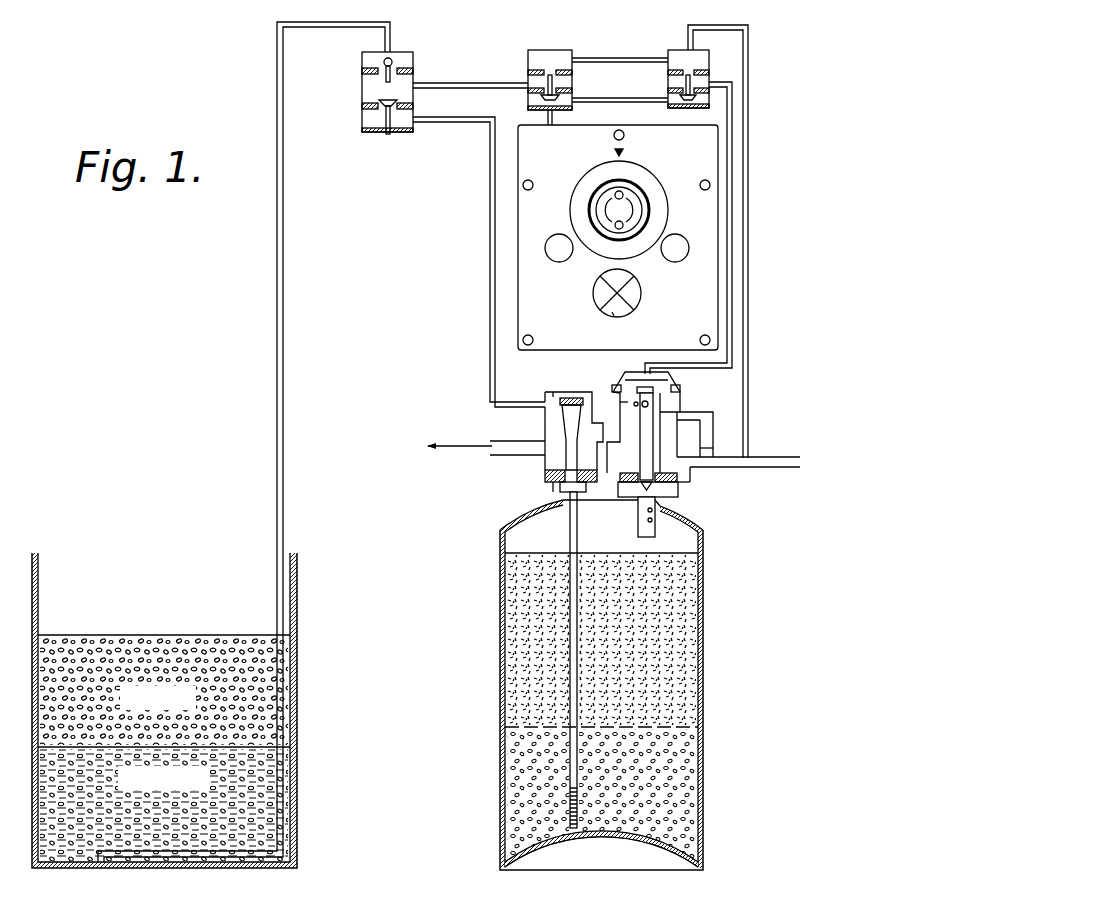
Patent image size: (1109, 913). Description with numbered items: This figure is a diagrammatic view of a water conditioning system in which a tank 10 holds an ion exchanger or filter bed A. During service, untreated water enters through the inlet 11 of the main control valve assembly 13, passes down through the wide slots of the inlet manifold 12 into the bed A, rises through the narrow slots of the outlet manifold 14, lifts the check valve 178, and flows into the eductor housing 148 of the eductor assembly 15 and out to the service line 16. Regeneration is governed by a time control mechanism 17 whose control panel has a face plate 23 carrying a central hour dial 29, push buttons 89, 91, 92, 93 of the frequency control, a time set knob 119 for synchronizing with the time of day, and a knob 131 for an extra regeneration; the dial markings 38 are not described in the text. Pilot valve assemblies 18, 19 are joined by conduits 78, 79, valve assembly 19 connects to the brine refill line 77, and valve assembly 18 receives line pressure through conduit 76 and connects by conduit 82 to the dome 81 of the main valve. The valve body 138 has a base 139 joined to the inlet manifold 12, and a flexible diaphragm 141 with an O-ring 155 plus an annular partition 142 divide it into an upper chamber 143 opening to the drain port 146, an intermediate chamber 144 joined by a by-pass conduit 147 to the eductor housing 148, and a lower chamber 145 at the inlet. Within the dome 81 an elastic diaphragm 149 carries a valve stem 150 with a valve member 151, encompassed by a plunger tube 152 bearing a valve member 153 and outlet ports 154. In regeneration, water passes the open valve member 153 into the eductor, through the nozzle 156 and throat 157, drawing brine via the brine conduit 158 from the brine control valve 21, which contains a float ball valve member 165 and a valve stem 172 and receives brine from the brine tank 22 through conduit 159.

The tank 10 is at (706, 606).
The inlet 11 is at (763, 460).
The inlet manifold 12 is at (640, 506).
The main control valve assembly 13 is at (683, 392).
The outlet manifold 14 is at (578, 631).
The eductor assembly 15 is at (541, 430).
The service line 16 is at (503, 458).
The time control mechanism 17 is at (722, 179).
The pilot valve assembly 18 is at (667, 49).
The pilot valve assembly 19 is at (575, 51).
The brine control valve 21 is at (416, 69).
The brine tank 22 is at (300, 666).
The face plate 23 is at (683, 316).
The hour dial 29 is at (655, 179).
The dial ring 38 is at (641, 203).
The conduit 76 is at (749, 292).
The brine refill line 77 is at (468, 83).
The conduit 78 is at (614, 64).
The conduit 79 is at (608, 109).
The dome 81 is at (631, 384).
The connecting conduit 82 is at (734, 219).
The push button 89 is at (638, 292).
The push button 91 is at (628, 282).
The push button 92 is at (596, 295).
The push button 93 is at (612, 313).
The time set knob 119 is at (551, 245).
The knob 131 is at (683, 239).
The valve body 138 is at (692, 438).
The base 139 is at (668, 482).
The flexible diaphragm 141 is at (707, 449).
The annular partition 142 is at (700, 470).
The upper chamber 143 is at (622, 401).
The intermediate chamber 144 is at (718, 450).
The lower chamber 145 is at (692, 485).
The drain port 146 is at (705, 413).
The by-pass conduit 147 is at (560, 486).
The eductor housing 148 is at (547, 464).
The elastic diaphragm 149 is at (588, 392).
The valve stem 150 is at (640, 488).
The valve member 151 is at (656, 513).
The plunger tube 152 is at (658, 406).
The valve member 153 is at (578, 526).
The outlet ports 154 is at (648, 387).
The O-ring 155 is at (715, 421).
The nozzle 156 is at (570, 398).
The throat 157 is at (550, 420).
The brine conduit 158 is at (490, 280).
The conduit 159 is at (286, 384).
The float ball valve member 165 is at (394, 59).
The valve stem 172 is at (387, 112).
The check valve 178 is at (545, 503).
The ion exchanger or filter bed A is at (650, 694).